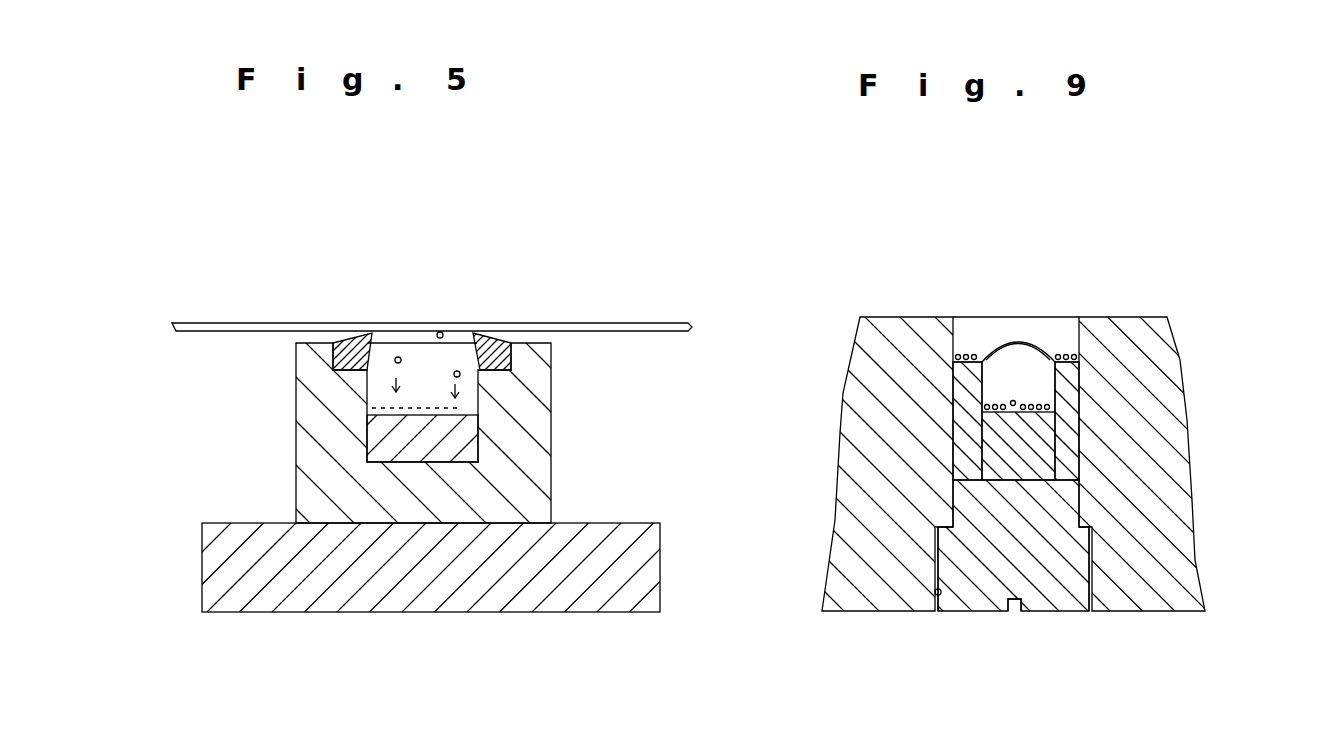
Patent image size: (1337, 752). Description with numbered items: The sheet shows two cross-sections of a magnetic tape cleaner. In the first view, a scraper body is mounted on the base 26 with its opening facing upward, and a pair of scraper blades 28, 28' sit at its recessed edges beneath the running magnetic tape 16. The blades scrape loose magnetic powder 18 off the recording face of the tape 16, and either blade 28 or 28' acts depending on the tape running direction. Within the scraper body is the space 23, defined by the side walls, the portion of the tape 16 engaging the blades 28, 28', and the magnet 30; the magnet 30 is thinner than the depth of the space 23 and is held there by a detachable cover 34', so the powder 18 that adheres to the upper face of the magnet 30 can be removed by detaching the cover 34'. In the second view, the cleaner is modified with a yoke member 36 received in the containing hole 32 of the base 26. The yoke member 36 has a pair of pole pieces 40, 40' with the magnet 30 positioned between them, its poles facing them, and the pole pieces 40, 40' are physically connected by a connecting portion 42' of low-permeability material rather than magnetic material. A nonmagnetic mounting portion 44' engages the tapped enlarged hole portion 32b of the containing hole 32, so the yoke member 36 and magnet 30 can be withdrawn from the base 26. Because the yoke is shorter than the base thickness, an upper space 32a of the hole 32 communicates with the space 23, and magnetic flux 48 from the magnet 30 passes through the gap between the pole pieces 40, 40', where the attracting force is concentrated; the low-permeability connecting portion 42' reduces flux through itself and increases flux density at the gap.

In FIG. 5, the magnetic tape 16 is at (432, 281).
In FIG. 5, the magnetic powder 18 is at (416, 319).
In FIG. 9, the magnetic powder 18 is at (1146, 356).
In FIG. 5, the space 23 is at (418, 433).
In FIG. 5, the base 26 is at (454, 567).
In FIG. 9, the base 26 is at (1076, 464).
In FIG. 5, the scraper blade 28 is at (350, 313).
In FIG. 5, the scraper blade 28' is at (499, 313).
In FIG. 5, the magnet 30 is at (457, 440).
In FIG. 9, the magnet 30 is at (1110, 443).
In FIG. 9, the containing hole 32 is at (1082, 332).
In FIG. 9, the upper space 32a is at (1016, 307).
In FIG. 9, the enlarged hole portion 32b is at (989, 628).
In FIG. 5, the rear cover 34' is at (451, 283).
In FIG. 9, the yoke member 36 is at (896, 604).
In FIG. 9, the pole piece 40 is at (965, 377).
In FIG. 9, the pole piece 40' is at (1093, 381).
In FIG. 9, the connecting portion 42' is at (1032, 528).
In FIG. 9, the mounting portion 44' is at (983, 626).
In FIG. 9, the magnetic flux 48 is at (1032, 293).